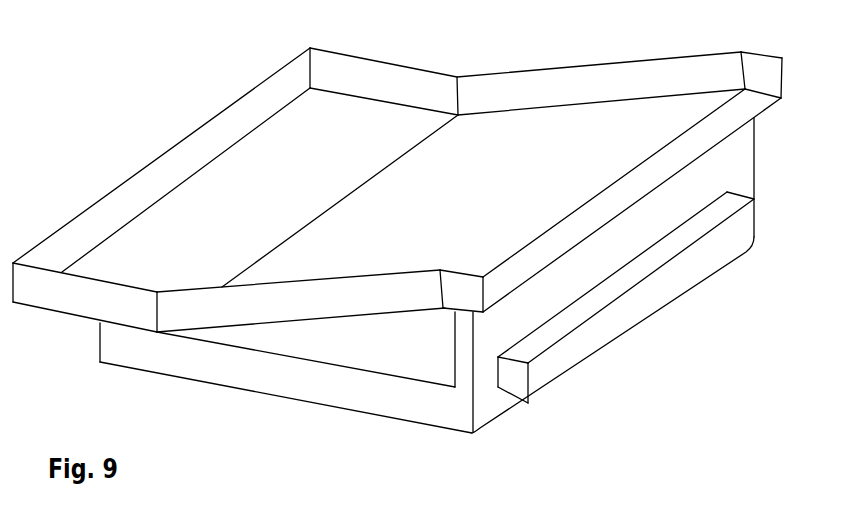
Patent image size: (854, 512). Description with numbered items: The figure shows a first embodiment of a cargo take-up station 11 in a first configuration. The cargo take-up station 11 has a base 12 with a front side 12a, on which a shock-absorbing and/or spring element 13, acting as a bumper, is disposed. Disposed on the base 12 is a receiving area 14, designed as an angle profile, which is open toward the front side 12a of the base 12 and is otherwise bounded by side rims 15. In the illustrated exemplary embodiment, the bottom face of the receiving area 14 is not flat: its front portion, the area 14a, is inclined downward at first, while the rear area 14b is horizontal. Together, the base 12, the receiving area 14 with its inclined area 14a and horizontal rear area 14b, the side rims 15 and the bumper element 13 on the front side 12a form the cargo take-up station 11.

The cargo take-up station 11 is at (152, 82).
The base 12 is at (440, 413).
The front side 12a is at (486, 398).
The shock-absorbing and/or spring element 13 is at (626, 297).
The receiving area 14 is at (452, 90).
The downward inclined area of the bottom face 14a is at (582, 210).
The rear area of the bottom face 14b is at (270, 218).
The side rims 15 is at (233, 313).